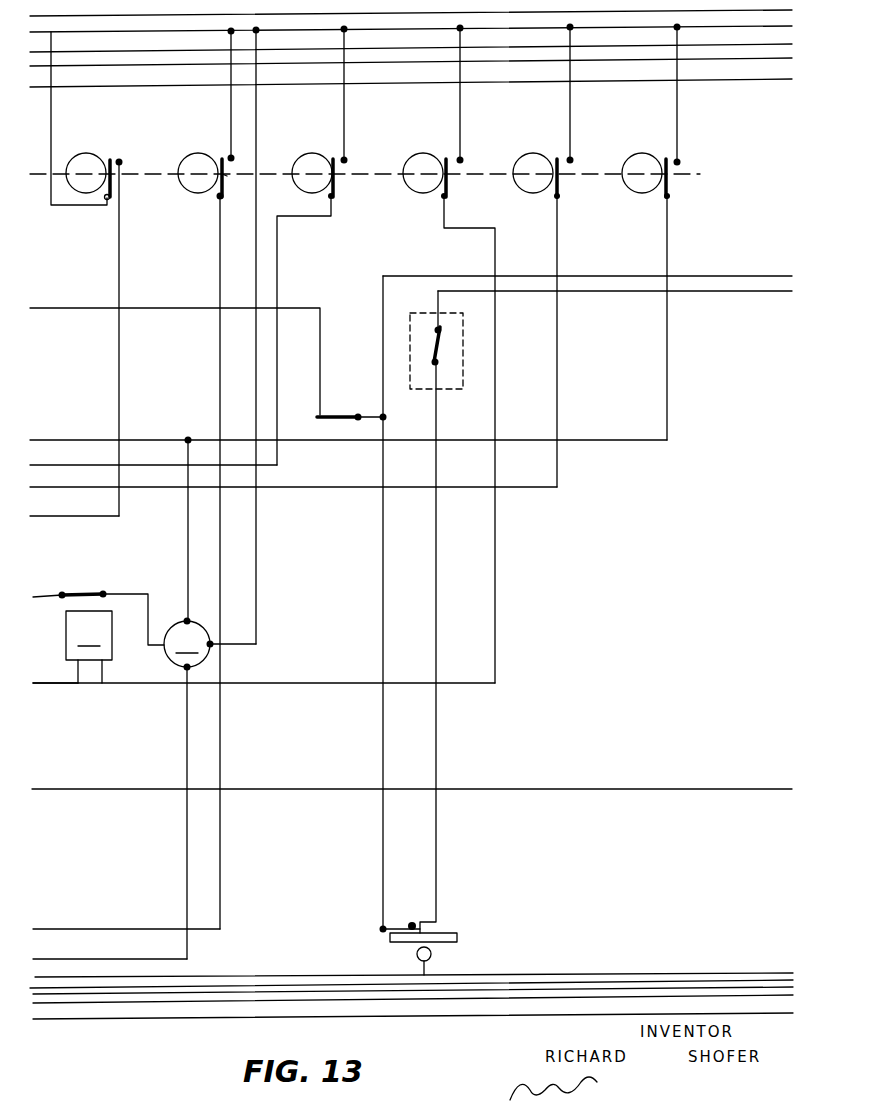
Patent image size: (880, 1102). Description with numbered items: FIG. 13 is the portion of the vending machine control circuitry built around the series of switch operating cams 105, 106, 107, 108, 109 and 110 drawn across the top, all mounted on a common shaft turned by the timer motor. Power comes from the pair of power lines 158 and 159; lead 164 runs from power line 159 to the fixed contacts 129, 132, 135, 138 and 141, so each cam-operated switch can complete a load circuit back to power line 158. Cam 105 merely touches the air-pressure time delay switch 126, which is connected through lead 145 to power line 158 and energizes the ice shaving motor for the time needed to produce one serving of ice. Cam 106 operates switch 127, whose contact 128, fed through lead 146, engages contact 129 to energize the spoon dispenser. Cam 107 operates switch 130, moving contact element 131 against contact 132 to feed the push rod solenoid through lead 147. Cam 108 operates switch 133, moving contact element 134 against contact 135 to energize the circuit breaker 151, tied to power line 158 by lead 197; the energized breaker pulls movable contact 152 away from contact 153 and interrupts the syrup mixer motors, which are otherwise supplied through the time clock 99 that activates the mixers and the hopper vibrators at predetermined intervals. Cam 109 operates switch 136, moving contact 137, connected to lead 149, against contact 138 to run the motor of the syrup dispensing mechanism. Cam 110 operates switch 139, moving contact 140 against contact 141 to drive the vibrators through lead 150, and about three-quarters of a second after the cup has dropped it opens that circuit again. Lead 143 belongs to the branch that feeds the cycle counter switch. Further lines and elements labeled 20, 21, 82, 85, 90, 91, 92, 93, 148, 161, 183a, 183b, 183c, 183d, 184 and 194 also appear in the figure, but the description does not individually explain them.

The switch 20 is at (324, 415).
The conductor 21 is at (174, 320).
The conductor 82 is at (770, 780).
The conductor 85 is at (43, 597).
The switch 90 is at (415, 313).
The conductor 91 is at (256, 590).
The push button 92 is at (397, 952).
The conductor 93 is at (120, 952).
The time clock 99 is at (189, 644).
The cam 105 is at (85, 158).
The cam 106 is at (203, 147).
The cam 107 is at (300, 143).
The cam 108 is at (405, 155).
The cam 109 is at (519, 147).
The cam 110 is at (632, 150).
The time delay switch 126 is at (121, 160).
The switch 127 is at (227, 184).
The contact 128 is at (216, 192).
The contact 129 is at (230, 156).
The switch 130 is at (333, 158).
The contact element 131 is at (324, 189).
The contact 132 is at (345, 160).
The switch 133 is at (450, 179).
The contact element 134 is at (440, 194).
The contact 135 is at (460, 160).
The switch 136 is at (555, 158).
The contact 137 is at (559, 180).
The contact 138 is at (573, 160).
The switch 139 is at (671, 181).
The contact 140 is at (660, 188).
The contact 141 is at (681, 162).
The lead 143 is at (754, 46).
The lead 145 is at (48, 520).
The lead 146 is at (110, 920).
The lead 147 is at (83, 463).
The conductor 148 is at (494, 258).
The lead 149 is at (90, 485).
The lead 150 is at (667, 258).
The circuit breaker 151 is at (89, 647).
The movable contact 152 is at (157, 591).
The contact 153 is at (65, 594).
The power line 158 is at (744, 12).
The power line 159 is at (746, 290).
The conductor 161 is at (782, 80).
The lead 164 is at (744, 29).
The conductor 183a is at (650, 963).
The conductor 183b is at (722, 968).
The conductor 183c is at (768, 986).
The conductor 183d is at (737, 998).
The conductor 184 is at (511, 1026).
The conductor 194 is at (258, 103).
The lead 197 is at (40, 683).